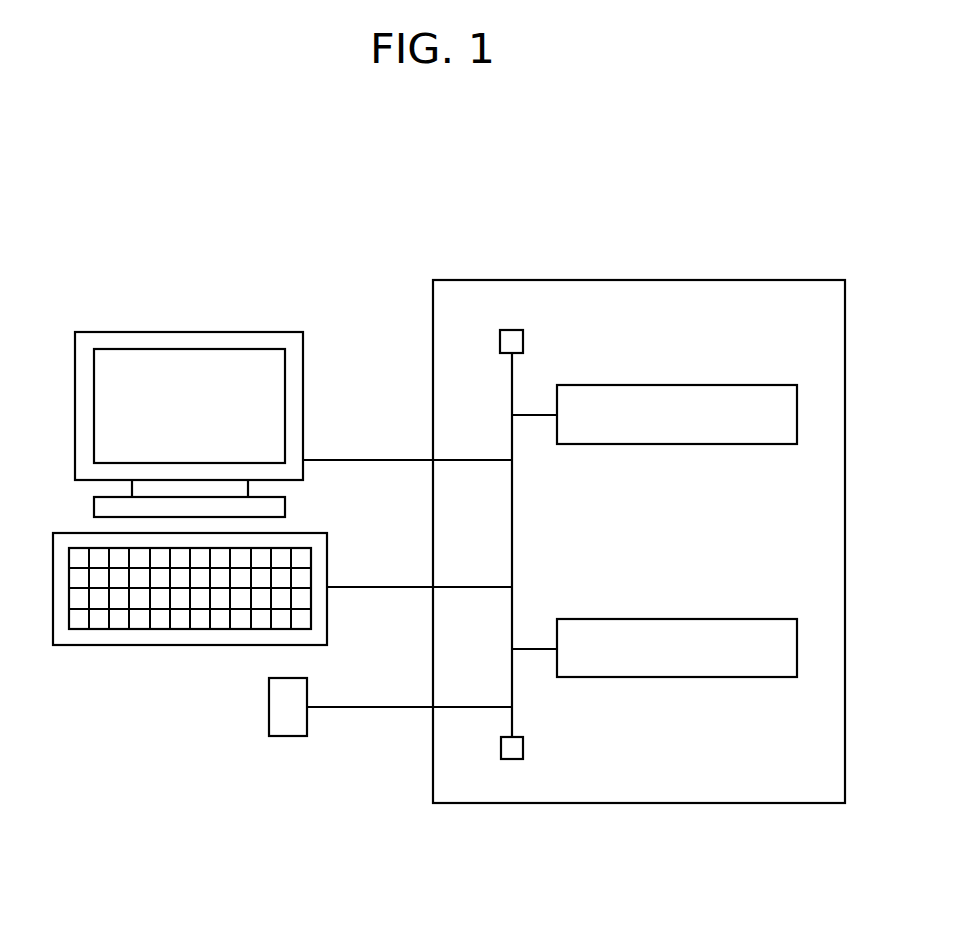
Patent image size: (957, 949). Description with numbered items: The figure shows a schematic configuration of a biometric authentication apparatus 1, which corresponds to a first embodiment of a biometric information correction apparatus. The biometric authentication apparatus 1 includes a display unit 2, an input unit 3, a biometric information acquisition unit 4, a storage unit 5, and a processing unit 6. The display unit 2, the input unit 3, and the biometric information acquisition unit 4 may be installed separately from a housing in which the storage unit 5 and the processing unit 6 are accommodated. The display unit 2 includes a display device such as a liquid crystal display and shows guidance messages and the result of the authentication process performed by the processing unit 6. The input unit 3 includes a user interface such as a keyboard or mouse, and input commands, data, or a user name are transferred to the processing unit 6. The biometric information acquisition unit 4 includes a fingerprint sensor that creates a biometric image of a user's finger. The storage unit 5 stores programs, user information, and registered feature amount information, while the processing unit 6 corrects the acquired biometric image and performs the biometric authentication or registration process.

The biometric authentication apparatus 1 is at (738, 864).
The display unit 2 is at (194, 332).
The input unit 3 is at (148, 645).
The biometric information acquisition unit 4 is at (290, 736).
The storage unit 5 is at (713, 444).
The processing unit 6 is at (713, 677).